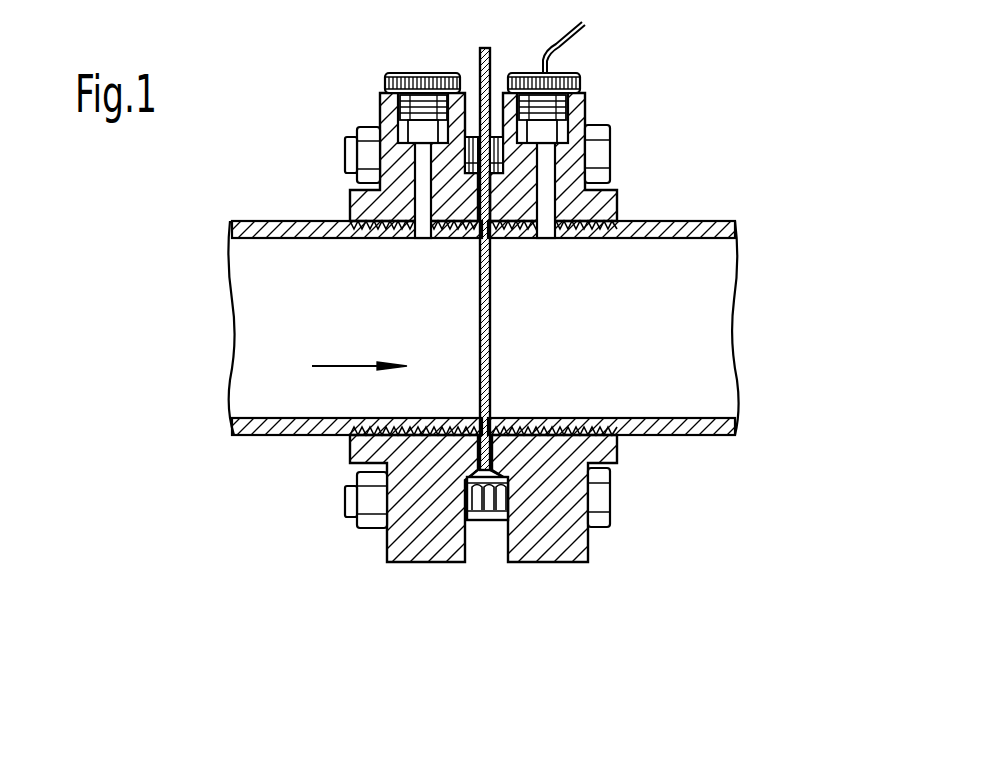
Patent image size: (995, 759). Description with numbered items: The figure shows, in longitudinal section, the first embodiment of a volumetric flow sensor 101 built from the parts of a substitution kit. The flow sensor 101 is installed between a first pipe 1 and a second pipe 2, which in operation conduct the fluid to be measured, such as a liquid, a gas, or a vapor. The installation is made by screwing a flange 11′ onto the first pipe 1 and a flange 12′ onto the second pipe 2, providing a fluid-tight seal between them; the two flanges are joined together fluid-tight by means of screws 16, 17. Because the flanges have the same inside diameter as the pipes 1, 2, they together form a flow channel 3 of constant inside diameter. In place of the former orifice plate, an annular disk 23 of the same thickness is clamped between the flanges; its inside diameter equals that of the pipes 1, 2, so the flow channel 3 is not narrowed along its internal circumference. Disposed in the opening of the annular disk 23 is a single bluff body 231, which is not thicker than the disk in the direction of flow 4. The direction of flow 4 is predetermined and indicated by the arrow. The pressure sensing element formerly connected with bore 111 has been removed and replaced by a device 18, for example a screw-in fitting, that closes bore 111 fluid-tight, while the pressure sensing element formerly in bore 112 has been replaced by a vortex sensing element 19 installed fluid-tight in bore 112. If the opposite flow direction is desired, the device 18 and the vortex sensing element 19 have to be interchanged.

The first pipe 1 is at (237, 222).
The second pipe 2 is at (733, 217).
The flow channel 3 is at (727, 285).
The direction of flow 4 is at (343, 367).
The flange 11′ is at (353, 200).
The flange 12′ is at (617, 193).
The bore 111 is at (421, 172).
The bore 112 is at (543, 183).
The screw 16 is at (597, 132).
The screw 17 is at (600, 520).
The device for closing bore 18 is at (387, 80).
The vortex sensing element 19 is at (577, 73).
The annular disk 23 is at (488, 60).
The bluff body 231 is at (492, 304).
The flow sensor 101 is at (712, 82).